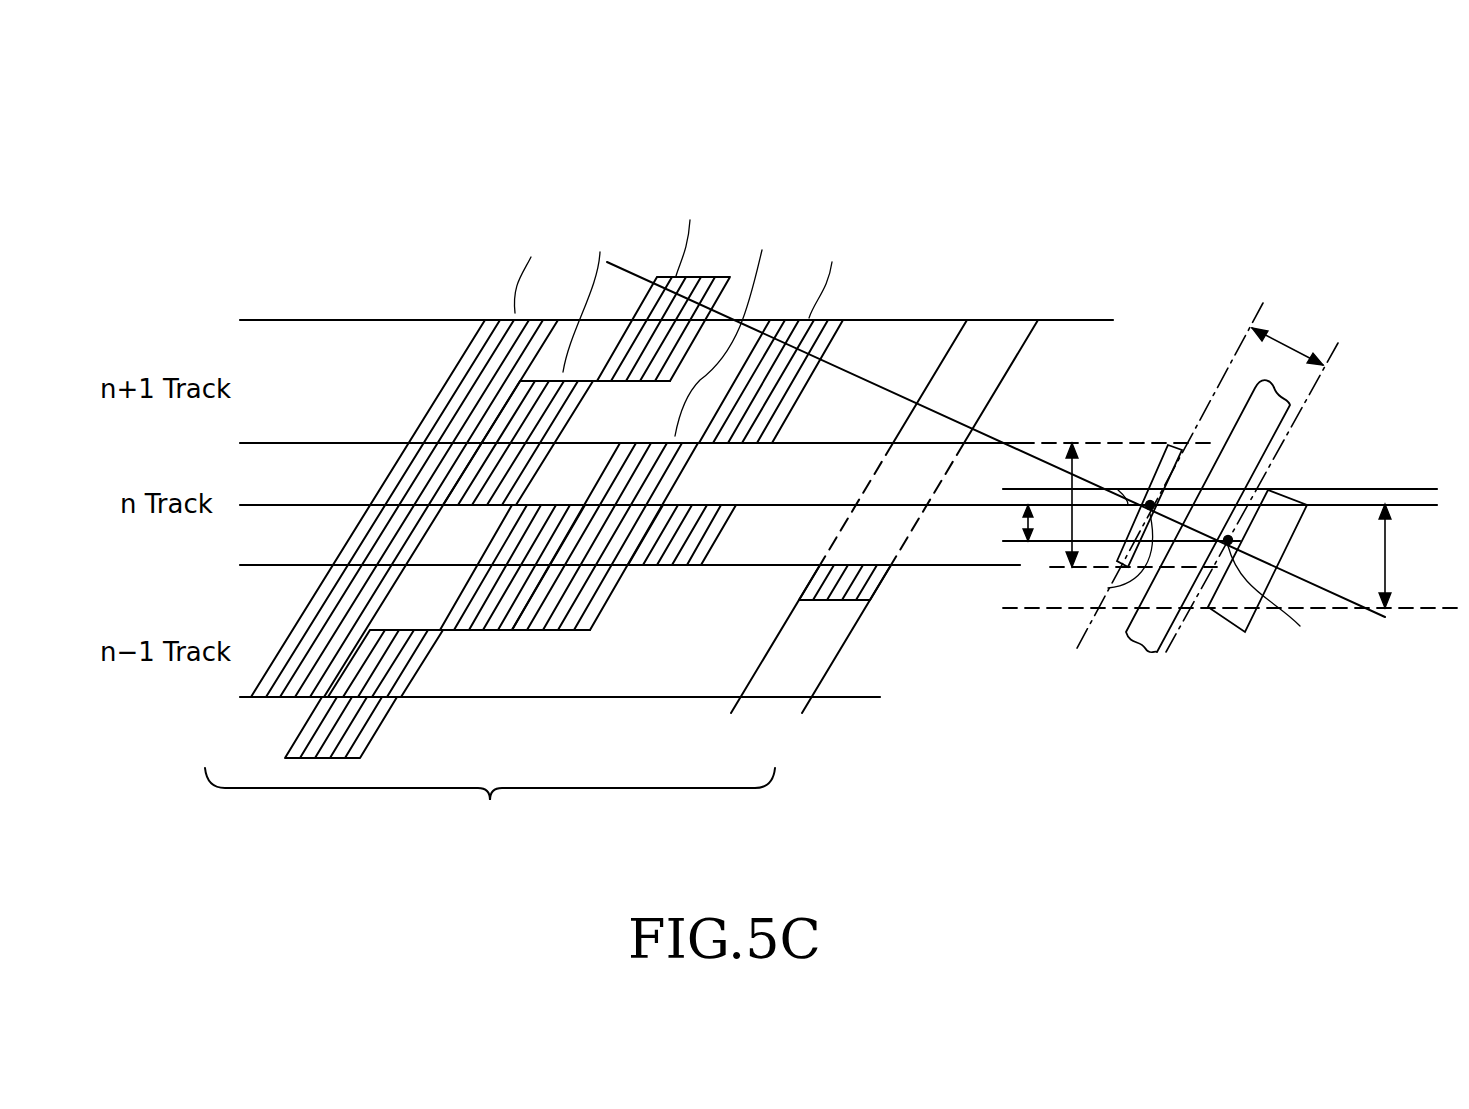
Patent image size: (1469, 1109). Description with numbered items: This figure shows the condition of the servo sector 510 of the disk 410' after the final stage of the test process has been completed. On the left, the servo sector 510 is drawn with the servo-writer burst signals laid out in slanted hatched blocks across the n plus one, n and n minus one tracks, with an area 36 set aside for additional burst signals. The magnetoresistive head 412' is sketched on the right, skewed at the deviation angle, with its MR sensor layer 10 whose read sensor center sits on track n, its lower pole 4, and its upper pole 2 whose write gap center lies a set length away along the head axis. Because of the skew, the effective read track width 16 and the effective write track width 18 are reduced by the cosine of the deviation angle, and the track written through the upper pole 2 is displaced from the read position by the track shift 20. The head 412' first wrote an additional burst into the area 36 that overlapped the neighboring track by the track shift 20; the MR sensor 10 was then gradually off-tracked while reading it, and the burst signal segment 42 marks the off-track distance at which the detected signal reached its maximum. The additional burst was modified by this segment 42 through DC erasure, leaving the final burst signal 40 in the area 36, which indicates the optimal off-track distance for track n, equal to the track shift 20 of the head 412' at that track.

The disk 410' is at (547, 453).
The magnetoresistive head 412' is at (1202, 475).
The effective read track width 16 is at (1068, 496).
The MR sensor layer 10 is at (1164, 466).
The lower pole 4 is at (1270, 424).
The track shift 20 is at (1009, 523).
The burst signal segment 42 is at (900, 522).
The final burst signal 40 is at (862, 574).
The area 36 is at (802, 713).
The effective write track width 18 is at (1403, 556).
The upper pole 2 is at (1222, 630).
The servo sector 510 is at (490, 811).